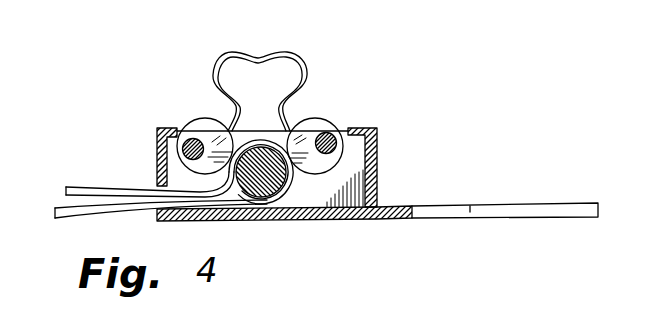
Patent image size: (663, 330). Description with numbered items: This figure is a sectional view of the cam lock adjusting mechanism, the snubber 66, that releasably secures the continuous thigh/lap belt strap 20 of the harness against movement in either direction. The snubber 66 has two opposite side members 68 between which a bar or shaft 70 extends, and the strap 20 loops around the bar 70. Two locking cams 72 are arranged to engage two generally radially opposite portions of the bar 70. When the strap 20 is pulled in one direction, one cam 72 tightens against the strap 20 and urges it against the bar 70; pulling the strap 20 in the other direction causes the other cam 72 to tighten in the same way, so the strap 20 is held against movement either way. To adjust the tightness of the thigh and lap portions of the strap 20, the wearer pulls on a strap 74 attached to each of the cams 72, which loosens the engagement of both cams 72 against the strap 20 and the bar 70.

The thigh/lap belt strap 20 is at (70, 181).
The snubber 66 is at (320, 104).
The side members 68 is at (350, 175).
The bar or shaft 70 is at (268, 183).
The locking cams 72 is at (197, 118).
The strap 74 is at (258, 55).